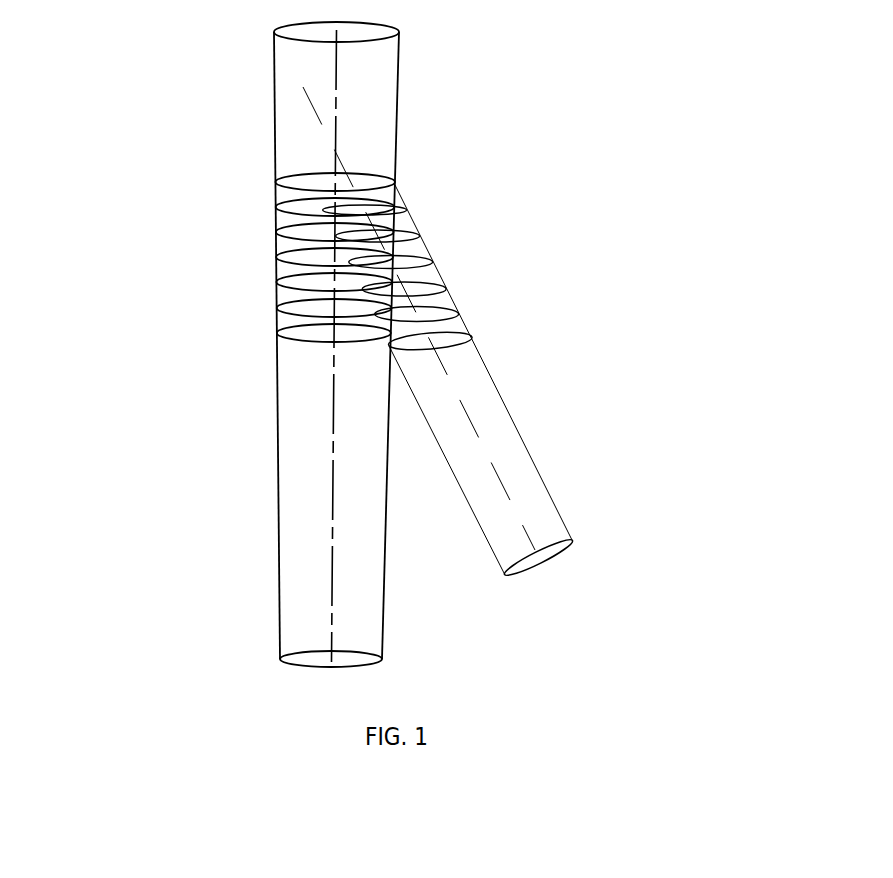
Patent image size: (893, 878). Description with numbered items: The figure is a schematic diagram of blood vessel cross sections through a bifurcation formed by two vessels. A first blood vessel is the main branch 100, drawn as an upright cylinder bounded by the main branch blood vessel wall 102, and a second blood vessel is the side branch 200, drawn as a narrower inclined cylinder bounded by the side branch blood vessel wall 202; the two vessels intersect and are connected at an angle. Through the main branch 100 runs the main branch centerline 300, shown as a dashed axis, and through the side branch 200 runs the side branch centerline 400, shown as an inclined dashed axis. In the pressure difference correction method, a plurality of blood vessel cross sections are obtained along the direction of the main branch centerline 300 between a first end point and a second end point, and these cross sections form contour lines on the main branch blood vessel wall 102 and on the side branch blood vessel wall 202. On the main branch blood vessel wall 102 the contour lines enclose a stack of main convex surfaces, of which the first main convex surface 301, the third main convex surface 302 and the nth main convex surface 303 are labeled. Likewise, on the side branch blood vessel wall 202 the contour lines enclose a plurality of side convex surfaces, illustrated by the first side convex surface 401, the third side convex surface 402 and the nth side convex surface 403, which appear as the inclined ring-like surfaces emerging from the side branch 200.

The main branch 100 is at (230, 349).
The main branch blood vessel wall 102 is at (245, 80).
The side branch 200 is at (505, 331).
The side branch blood vessel wall 202 is at (564, 362).
The main branch centerline 300 is at (258, 365).
The first main convex surface 301 is at (241, 392).
The third main convex surface 302 is at (232, 333).
The nth main convex surface 303 is at (250, 208).
The side branch centerline 400 is at (614, 589).
The first side convex surface 401 is at (524, 297).
The third side convex surface 402 is at (494, 246).
The nth side convex surface 403 is at (456, 151).